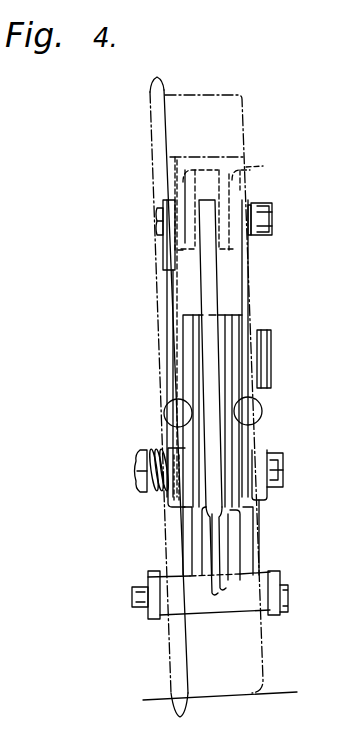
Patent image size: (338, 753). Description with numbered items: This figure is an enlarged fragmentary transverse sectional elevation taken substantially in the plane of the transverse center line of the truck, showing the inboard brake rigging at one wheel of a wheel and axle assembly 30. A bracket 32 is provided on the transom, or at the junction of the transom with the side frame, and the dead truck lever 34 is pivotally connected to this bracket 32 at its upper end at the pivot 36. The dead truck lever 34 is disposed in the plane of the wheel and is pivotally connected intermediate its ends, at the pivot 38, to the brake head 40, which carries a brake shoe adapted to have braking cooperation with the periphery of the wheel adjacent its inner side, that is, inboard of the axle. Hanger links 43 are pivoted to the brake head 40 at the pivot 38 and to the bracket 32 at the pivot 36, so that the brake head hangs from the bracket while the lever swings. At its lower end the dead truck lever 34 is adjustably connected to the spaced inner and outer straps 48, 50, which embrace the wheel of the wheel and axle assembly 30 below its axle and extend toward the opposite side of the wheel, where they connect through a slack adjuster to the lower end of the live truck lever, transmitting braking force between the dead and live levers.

The wheel and axle assembly 30 is at (175, 658).
The bracket 32 is at (240, 185).
The dead truck lever 34 is at (210, 272).
The pivotal connection 36 is at (272, 216).
The pivotal connection 38 is at (283, 481).
The brake head 40 is at (235, 458).
The hanger links 43 is at (249, 306).
The inner strap 48 is at (152, 578).
The outer strap 50 is at (274, 572).